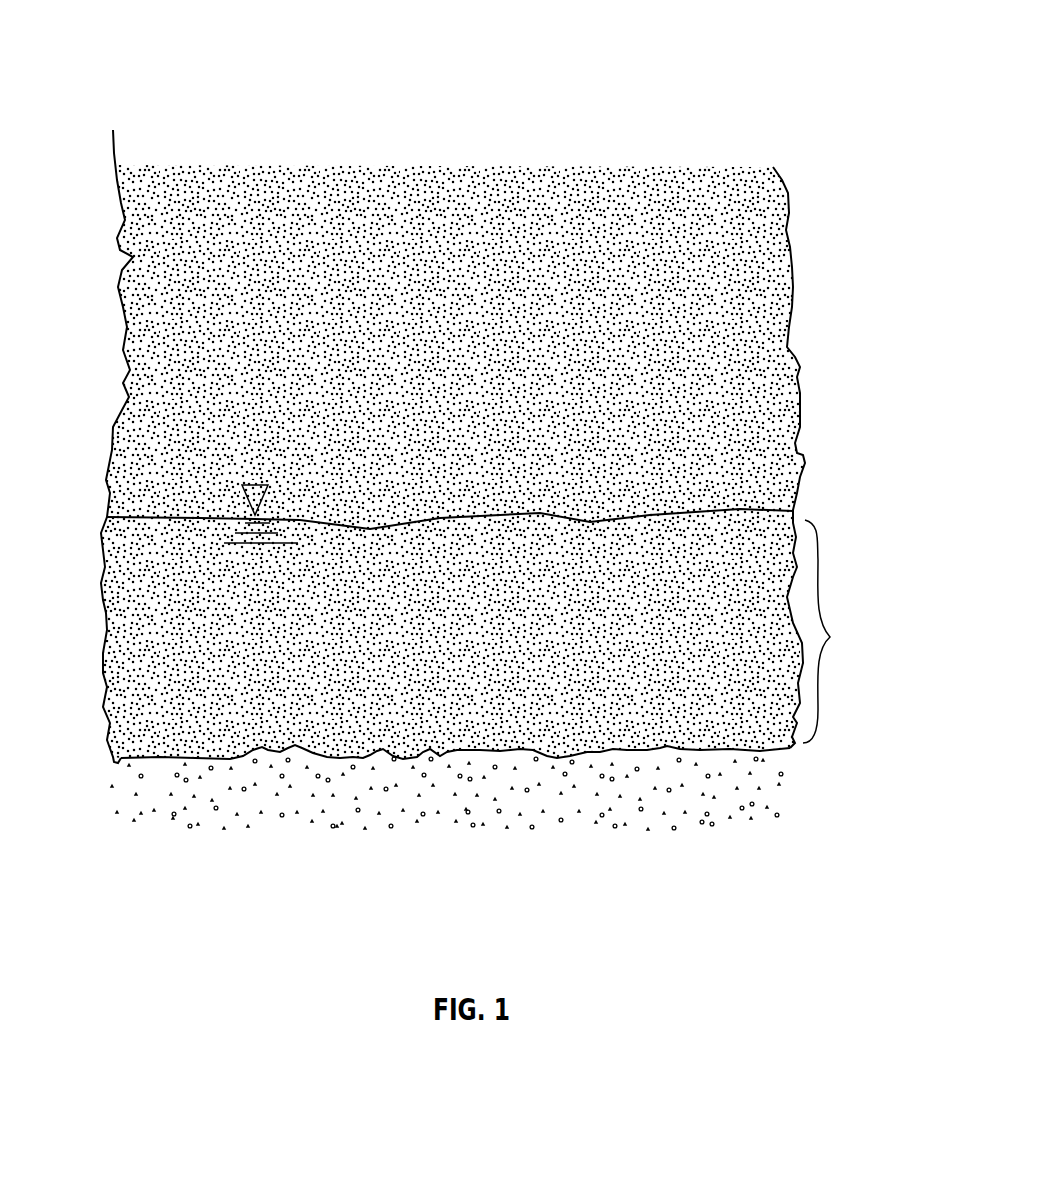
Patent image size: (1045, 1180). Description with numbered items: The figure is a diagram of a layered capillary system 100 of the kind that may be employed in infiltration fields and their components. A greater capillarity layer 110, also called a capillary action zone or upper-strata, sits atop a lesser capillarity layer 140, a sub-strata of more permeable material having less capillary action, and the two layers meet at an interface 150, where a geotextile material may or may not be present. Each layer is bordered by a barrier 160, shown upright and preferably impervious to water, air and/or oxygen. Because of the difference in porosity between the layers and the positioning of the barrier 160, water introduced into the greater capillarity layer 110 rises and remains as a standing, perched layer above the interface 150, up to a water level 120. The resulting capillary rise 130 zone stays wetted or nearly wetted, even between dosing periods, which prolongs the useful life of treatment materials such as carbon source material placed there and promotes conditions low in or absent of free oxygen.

The layered capillary system 100 is at (385, 31).
The greater capillarity layer 110 is at (753, 332).
The water level 120 is at (763, 510).
The capillary rise 130 is at (875, 634).
The lesser capillarity layer 140 is at (756, 844).
The interface 150 is at (160, 758).
The barrier 160 is at (800, 368).